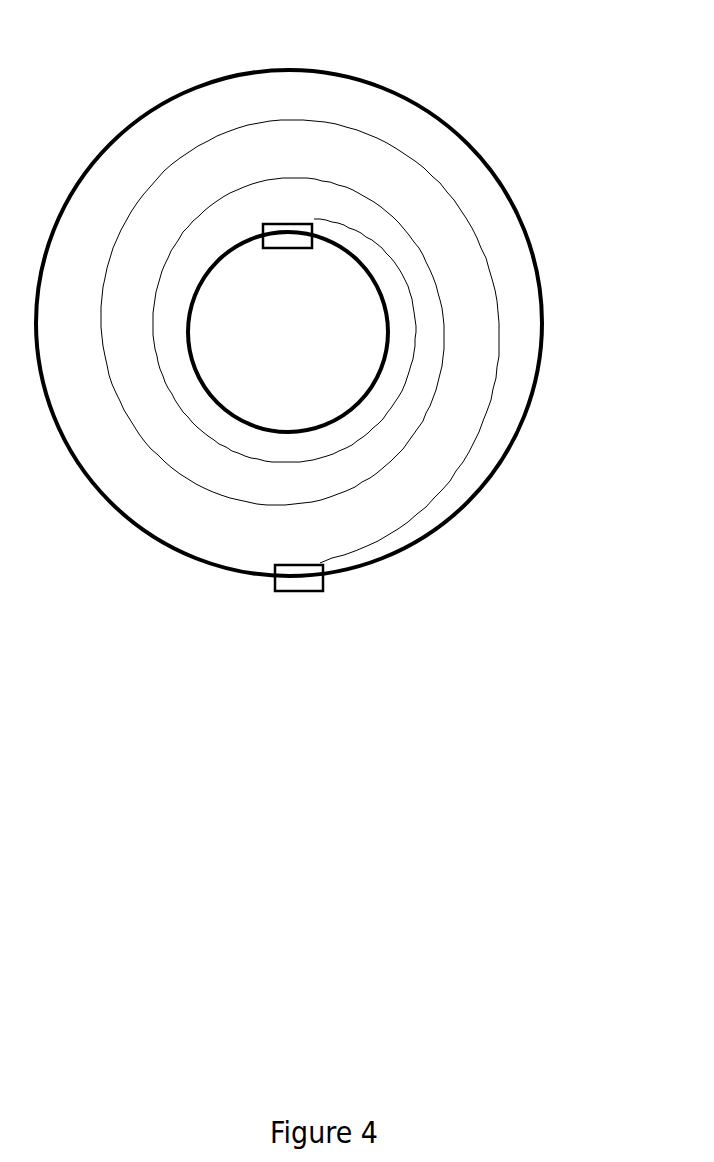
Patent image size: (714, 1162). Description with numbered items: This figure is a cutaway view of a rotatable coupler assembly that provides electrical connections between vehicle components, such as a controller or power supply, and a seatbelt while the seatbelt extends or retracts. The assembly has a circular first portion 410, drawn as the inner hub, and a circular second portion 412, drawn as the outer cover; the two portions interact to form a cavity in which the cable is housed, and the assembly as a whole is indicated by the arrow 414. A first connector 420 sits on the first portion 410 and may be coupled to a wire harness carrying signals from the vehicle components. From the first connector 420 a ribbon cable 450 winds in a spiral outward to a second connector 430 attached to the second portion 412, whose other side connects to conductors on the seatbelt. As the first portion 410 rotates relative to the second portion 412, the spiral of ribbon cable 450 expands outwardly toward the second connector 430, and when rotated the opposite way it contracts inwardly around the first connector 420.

The first portion 410 is at (291, 430).
The second portion 412 is at (380, 77).
The coil assembly 414 is at (189, 57).
The first connector 420 is at (297, 249).
The second connector 430 is at (300, 592).
The ribbon cable 450 is at (498, 372).